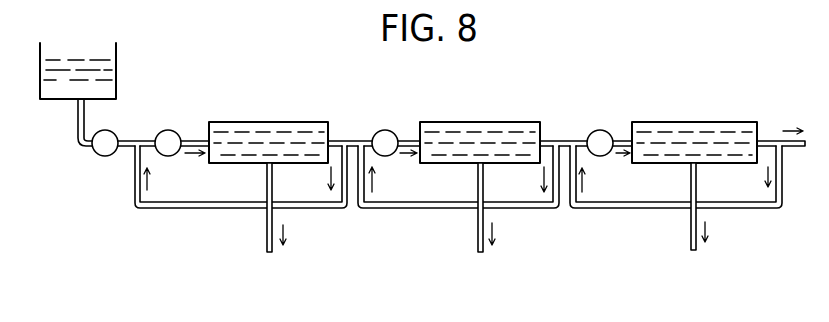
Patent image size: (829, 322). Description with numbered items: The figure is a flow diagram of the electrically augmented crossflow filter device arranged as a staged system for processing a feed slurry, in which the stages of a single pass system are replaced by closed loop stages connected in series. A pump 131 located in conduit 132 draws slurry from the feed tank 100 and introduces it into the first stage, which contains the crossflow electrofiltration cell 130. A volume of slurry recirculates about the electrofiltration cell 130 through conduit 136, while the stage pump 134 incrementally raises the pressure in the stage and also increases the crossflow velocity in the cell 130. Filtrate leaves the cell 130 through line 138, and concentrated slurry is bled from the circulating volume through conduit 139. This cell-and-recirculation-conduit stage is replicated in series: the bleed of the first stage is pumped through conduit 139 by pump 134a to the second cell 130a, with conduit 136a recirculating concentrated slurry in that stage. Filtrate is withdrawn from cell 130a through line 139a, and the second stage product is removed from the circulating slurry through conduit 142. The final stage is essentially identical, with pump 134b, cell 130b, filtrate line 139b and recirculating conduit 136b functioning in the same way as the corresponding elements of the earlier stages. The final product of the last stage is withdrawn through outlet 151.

The feed tank 100 is at (116, 73).
The pump 131 is at (106, 157).
The conduit 132 is at (194, 141).
The stage pump 134 is at (170, 157).
The crossflow electrofiltration cell 130 is at (263, 122).
The conduit 136 is at (230, 210).
The line 138 is at (266, 244).
The conduit 139 is at (412, 141).
The pump 134a is at (390, 156).
The cell 130a is at (468, 122).
The conduit 136a is at (408, 210).
The line 139a is at (477, 244).
The conduit 142 is at (625, 141).
The pump 134b is at (603, 156).
The cell 130b is at (690, 122).
The recirculating conduit 136b is at (613, 210).
The filtrate line 139b is at (690, 244).
The outlet 151 is at (798, 147).